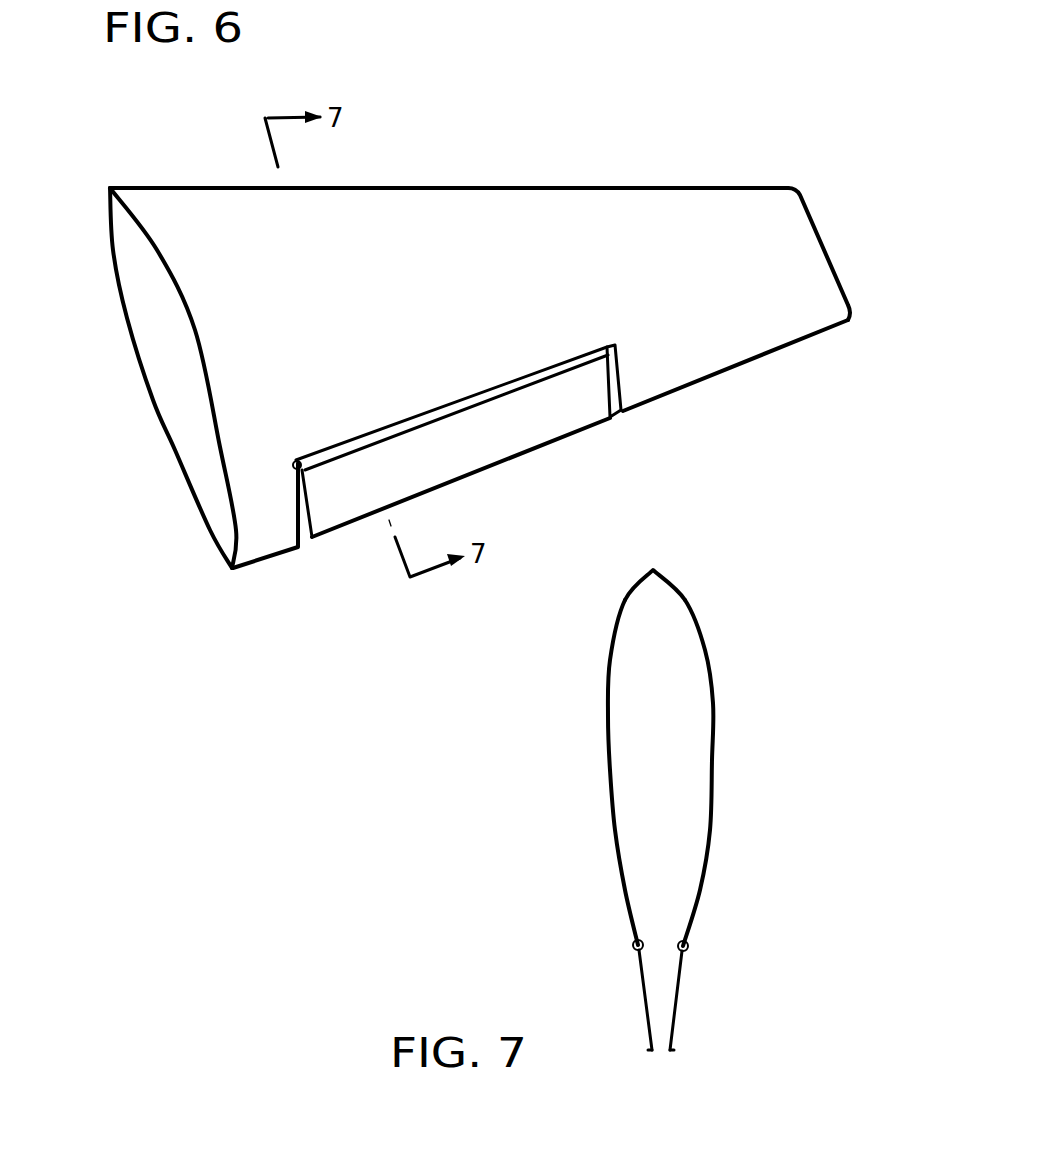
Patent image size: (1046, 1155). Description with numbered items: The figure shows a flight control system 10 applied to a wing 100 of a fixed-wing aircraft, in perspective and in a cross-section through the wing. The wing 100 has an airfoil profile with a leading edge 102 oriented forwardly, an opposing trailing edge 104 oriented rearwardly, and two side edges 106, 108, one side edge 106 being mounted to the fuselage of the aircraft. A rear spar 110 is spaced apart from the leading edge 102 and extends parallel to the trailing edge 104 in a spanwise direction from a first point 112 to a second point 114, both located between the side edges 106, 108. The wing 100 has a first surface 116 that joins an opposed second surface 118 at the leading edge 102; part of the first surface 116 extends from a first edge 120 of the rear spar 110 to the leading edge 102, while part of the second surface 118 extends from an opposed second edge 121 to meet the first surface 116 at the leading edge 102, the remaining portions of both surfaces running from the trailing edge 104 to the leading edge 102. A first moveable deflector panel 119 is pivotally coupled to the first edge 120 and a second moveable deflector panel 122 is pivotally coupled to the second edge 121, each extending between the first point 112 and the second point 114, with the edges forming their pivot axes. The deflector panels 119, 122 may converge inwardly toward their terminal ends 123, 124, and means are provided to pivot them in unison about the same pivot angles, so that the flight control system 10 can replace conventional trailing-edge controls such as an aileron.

In FIG. 6, the flight control system 10 is at (272, 600).
In FIG. 6, the wing 100 is at (461, 336).
In FIG. 7, the wing 100 is at (684, 806).
In FIG. 6, the leading edge 102 is at (440, 185).
In FIG. 7, the leading edge 102 is at (653, 570).
In FIG. 6, the trailing edge 104 is at (790, 347).
In FIG. 6, the side edge 106 is at (173, 393).
In FIG. 6, the side edge 108 is at (823, 227).
In FIG. 6, the rear spar 110 is at (430, 406).
In FIG. 7, the rear spar 110 is at (664, 980).
In FIG. 6, the first point 112 is at (300, 458).
In FIG. 6, the second point 114 is at (597, 342).
In FIG. 6, the first surface 116 is at (380, 292).
In FIG. 7, the first surface 116 is at (713, 713).
In FIG. 6, the second surface 118 is at (127, 318).
In FIG. 7, the second surface 118 is at (608, 747).
In FIG. 6, the first moveable deflector panel 119 is at (513, 433).
In FIG. 7, the first moveable deflector panel 119 is at (683, 993).
In FIG. 6, the first edge 120 is at (388, 425).
In FIG. 7, the first edge 120 is at (688, 946).
In FIG. 7, the second edge 121 is at (633, 945).
In FIG. 7, the second moveable deflector panel 122 is at (645, 1008).
In FIG. 6, the terminal end 123 is at (353, 523).
In FIG. 7, the terminal end 123 is at (674, 1050).
In FIG. 7, the terminal end 124 is at (648, 1050).